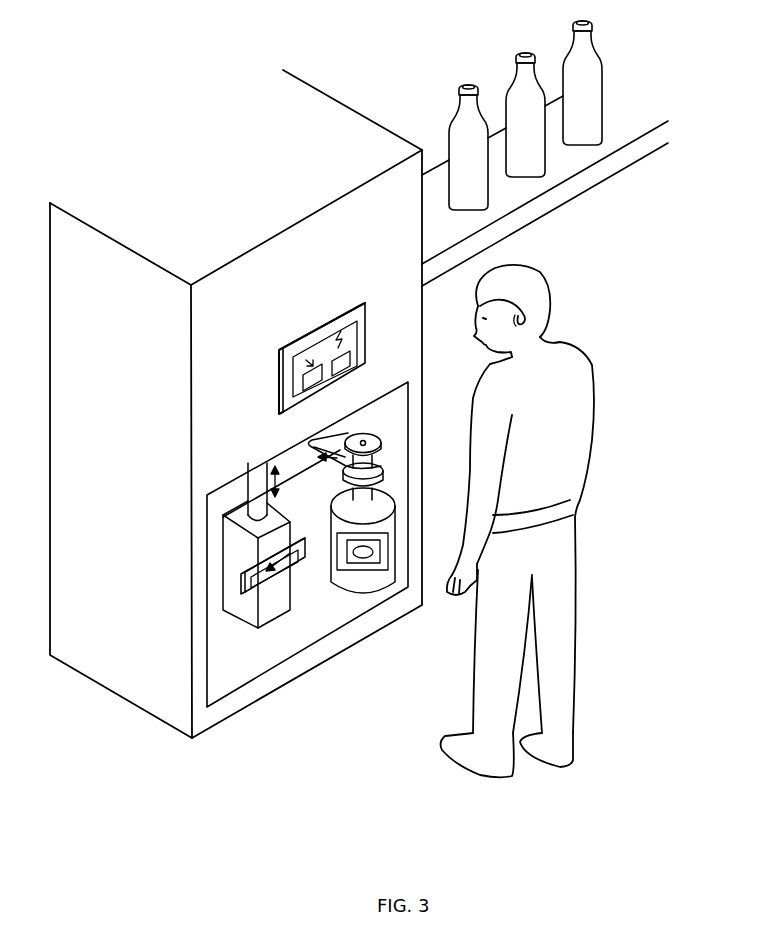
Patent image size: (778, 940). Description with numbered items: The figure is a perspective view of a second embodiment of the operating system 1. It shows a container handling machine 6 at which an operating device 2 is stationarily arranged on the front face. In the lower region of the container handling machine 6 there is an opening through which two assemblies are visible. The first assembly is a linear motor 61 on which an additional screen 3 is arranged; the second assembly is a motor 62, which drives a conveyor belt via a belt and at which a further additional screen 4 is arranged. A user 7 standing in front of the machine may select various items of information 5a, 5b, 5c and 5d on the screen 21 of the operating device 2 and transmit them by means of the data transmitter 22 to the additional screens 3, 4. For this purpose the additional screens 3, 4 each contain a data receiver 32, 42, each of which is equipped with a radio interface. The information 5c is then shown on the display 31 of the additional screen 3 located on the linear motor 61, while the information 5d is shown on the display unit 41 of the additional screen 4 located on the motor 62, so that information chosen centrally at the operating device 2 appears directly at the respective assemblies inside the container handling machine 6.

The operating system 1 is at (317, 714).
The operating device 2 is at (328, 455).
The screen 21 is at (357, 335).
The data transmitter 22 is at (364, 302).
The additional screen 3 is at (267, 585).
The display 31 is at (240, 604).
The data receiver 32 is at (303, 536).
The additional screen 4 is at (384, 574).
The display unit 41 is at (348, 590).
The data receiver 42 is at (383, 523).
The information 5a is at (310, 356).
The information 5b is at (301, 383).
The information 5c is at (339, 330).
The information 5d is at (336, 376).
The container handling machine 6 is at (179, 702).
The linear motor 61 is at (230, 548).
The motor 62 is at (386, 493).
The user 7 is at (545, 463).